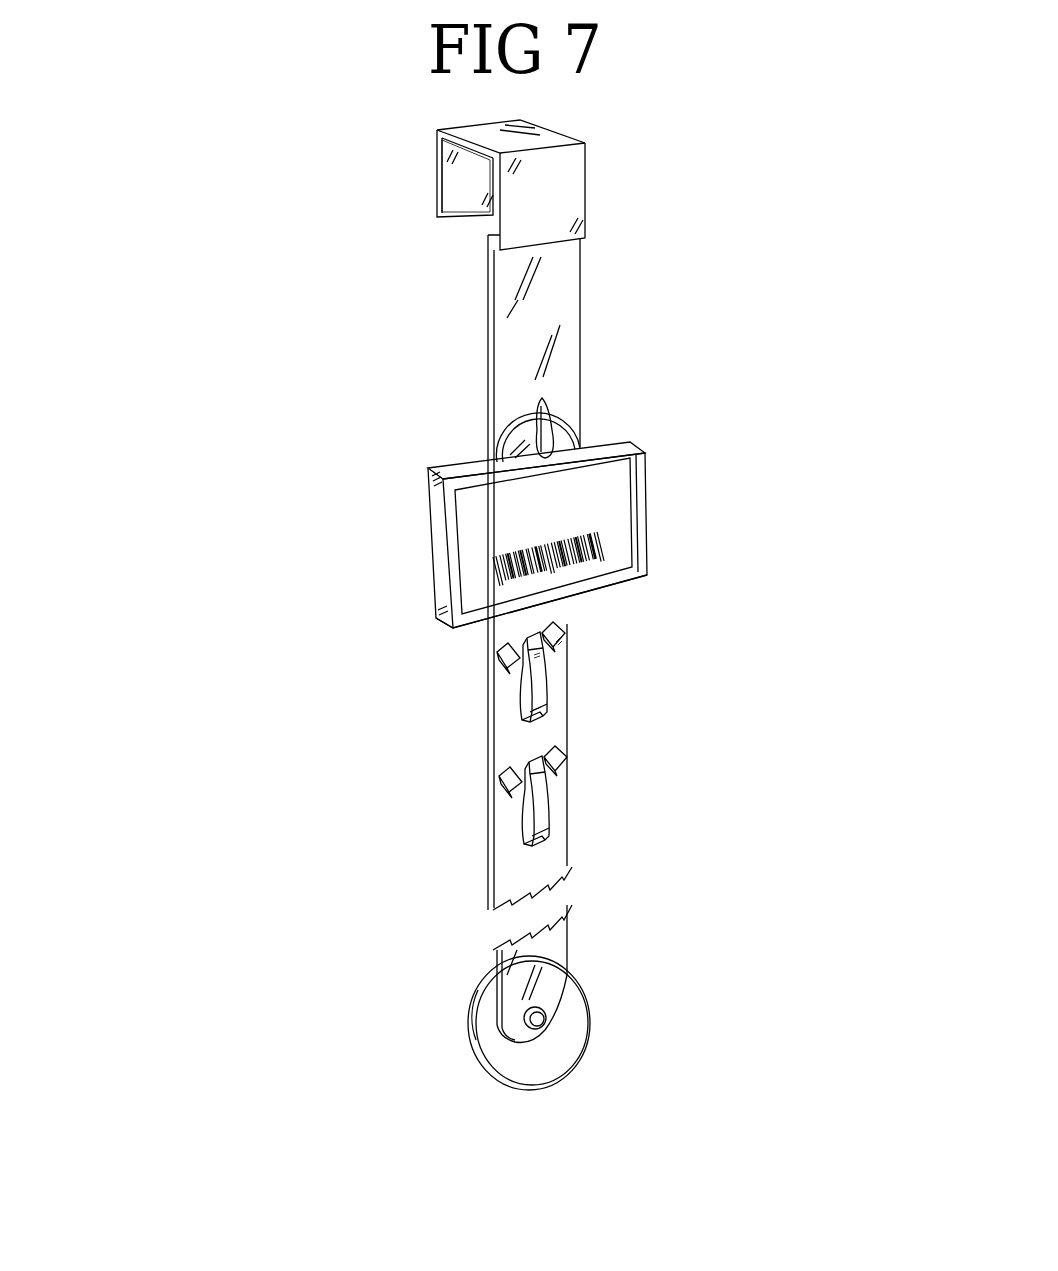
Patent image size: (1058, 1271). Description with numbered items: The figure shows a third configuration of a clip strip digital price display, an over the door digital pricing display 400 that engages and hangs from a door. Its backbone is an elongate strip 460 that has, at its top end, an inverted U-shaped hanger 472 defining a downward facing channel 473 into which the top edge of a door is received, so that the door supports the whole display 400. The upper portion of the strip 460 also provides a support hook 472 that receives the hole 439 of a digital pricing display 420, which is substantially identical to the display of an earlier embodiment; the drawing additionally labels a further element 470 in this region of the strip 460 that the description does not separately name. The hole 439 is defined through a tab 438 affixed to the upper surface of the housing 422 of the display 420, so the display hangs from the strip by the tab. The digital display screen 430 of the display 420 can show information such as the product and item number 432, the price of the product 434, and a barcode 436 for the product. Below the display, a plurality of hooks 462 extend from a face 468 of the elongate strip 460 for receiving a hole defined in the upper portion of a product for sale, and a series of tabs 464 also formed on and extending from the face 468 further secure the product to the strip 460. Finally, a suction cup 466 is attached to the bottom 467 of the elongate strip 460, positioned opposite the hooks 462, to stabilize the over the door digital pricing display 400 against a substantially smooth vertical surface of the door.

The over the door digital pricing display 400 is at (130, 496).
The digital pricing display 420 is at (428, 538).
The housing 422 is at (435, 603).
The digital display screen 430 is at (640, 460).
The product and item number 432 is at (480, 502).
The price of the product 434 is at (630, 503).
The barcode 436 is at (608, 542).
The tab 438 is at (563, 430).
The hole 439 is at (528, 437).
The elongate strip 460 is at (484, 748).
The hooks 462 is at (547, 683).
The tabs 464 is at (563, 632).
The suction cup 466 is at (485, 1073).
The bottom 467 is at (560, 978).
The face 468 is at (510, 822).
The tab 470 is at (547, 410).
The inverted U-shaped hanger 472 is at (433, 175).
The downward facing channel 473 is at (464, 228).